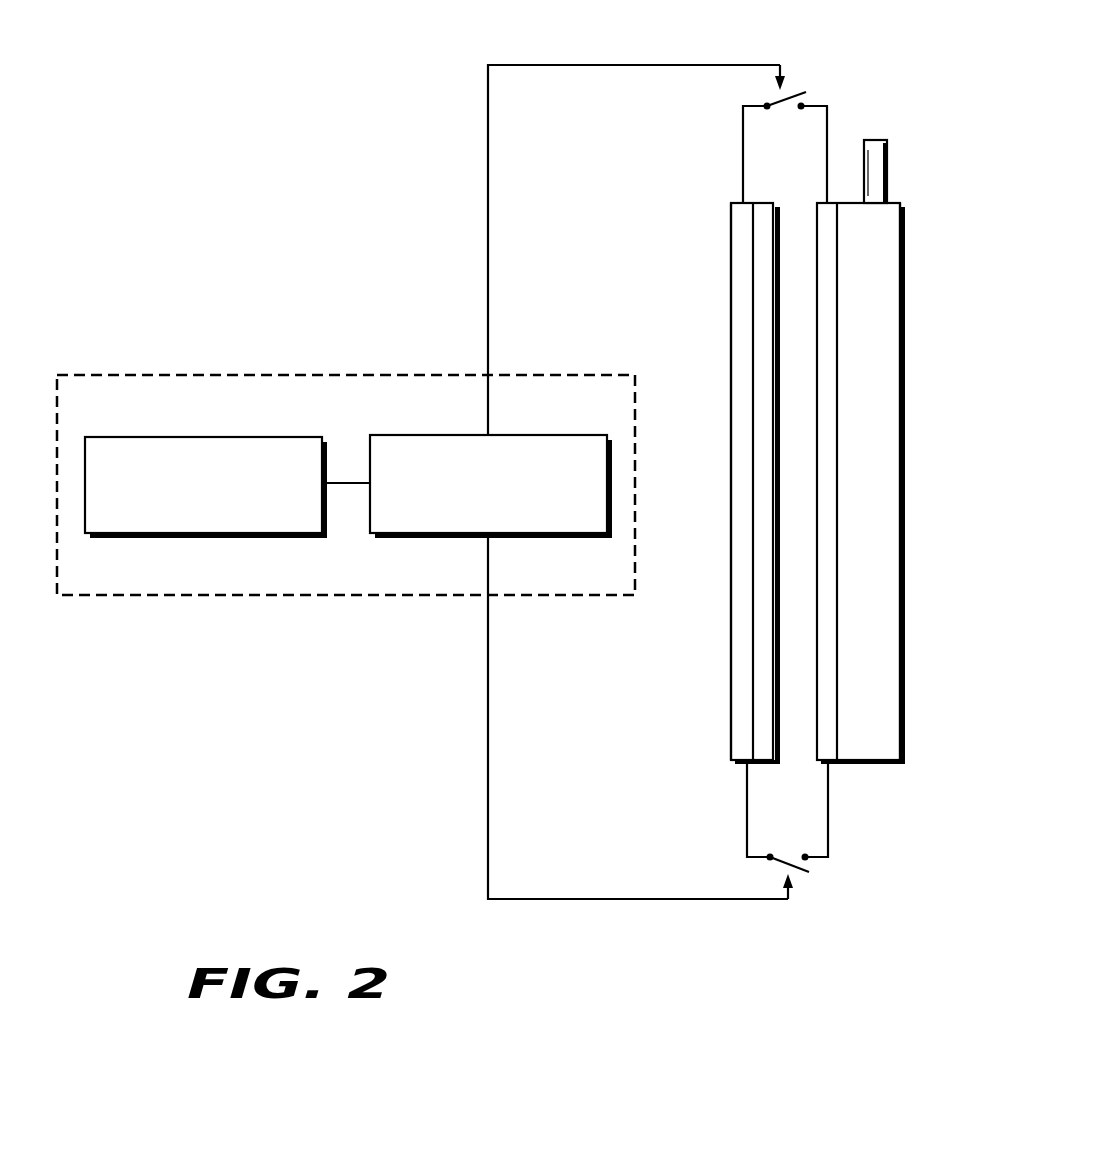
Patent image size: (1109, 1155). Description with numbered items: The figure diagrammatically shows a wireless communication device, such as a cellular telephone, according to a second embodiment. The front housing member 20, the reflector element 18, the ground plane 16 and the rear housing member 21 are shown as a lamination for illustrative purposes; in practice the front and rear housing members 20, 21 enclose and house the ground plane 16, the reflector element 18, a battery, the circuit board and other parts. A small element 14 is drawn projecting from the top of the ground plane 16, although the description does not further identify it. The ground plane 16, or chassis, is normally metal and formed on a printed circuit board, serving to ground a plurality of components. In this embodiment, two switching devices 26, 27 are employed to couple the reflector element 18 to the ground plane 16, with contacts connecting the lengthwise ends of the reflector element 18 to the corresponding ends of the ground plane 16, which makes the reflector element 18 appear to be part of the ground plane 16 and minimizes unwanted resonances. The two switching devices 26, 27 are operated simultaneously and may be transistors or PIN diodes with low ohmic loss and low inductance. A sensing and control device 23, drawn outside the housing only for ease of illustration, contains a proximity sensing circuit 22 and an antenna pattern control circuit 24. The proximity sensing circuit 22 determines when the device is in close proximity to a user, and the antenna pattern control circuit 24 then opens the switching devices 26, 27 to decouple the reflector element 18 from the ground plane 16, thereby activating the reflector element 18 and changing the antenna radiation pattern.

The antenna feed 14 is at (887, 168).
The ground plane 16 is at (884, 483).
The reflector element 18 is at (732, 483).
The front housing member 20 is at (734, 690).
The rear housing member 21 is at (894, 690).
The proximity sensing circuit 22 is at (208, 433).
The sensing and control device 23 is at (345, 598).
The antenna pattern control circuit 24 is at (567, 538).
The switching device 26 is at (819, 66).
The switching device 27 is at (822, 896).